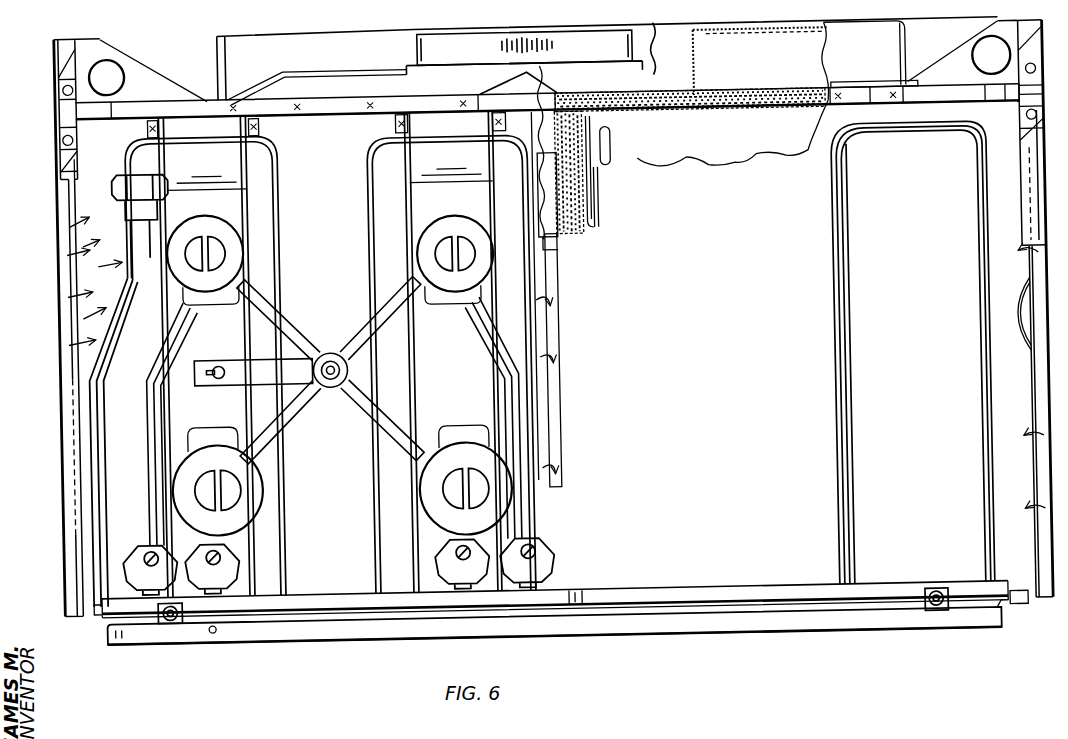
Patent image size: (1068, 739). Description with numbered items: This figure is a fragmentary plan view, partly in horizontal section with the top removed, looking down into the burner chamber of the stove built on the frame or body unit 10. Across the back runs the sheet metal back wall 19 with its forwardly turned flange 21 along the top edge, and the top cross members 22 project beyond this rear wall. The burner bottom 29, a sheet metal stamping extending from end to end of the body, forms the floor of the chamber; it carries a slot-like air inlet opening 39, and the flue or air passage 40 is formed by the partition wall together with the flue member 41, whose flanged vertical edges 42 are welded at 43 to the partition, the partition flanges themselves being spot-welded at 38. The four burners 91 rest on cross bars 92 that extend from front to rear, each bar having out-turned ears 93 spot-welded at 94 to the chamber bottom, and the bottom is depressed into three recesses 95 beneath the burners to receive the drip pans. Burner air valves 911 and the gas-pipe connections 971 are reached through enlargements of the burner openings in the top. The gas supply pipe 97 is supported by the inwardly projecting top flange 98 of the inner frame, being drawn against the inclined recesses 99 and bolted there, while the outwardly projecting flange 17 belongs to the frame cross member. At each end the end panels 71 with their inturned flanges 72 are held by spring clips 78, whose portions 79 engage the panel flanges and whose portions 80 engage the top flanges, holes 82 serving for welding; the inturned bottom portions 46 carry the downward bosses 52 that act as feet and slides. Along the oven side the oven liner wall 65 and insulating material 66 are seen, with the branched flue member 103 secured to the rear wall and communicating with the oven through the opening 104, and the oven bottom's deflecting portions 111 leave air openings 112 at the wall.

The frame or body unit 10 is at (1013, 600).
The outwardly projecting flange 17 is at (270, 633).
The sheet metal back wall 19 is at (150, 100).
The forwardly turned flange 21 is at (178, 108).
The top cross members 22 is at (67, 192).
The burner bottom 29 is at (1003, 570).
The spot welds 38 is at (557, 328).
The slot-like air inlet opening 39 is at (557, 393).
The flue or air passage 40 is at (547, 220).
The flue member 41 is at (565, 242).
The flanged vertical edges 42 is at (612, 152).
The welds 43 is at (580, 142).
The inturned bottom portions 46 is at (116, 57).
The downward bosses 52 is at (90, 88).
The oven liner wall 65 is at (583, 182).
The insulating material 66 is at (587, 162).
The end panels or end walls 71 is at (60, 338).
The inturned flanges 72 is at (67, 383).
The clips 78 is at (74, 165).
The clip portions 79 is at (67, 63).
The clip portions 80 is at (62, 123).
The holes 82 is at (63, 90).
The burners 91 is at (233, 255).
The cross bars 92 is at (420, 213).
The out-turned ears 93 is at (257, 128).
The spot welds 94 is at (263, 133).
The recesses 95 is at (397, 547).
The gas supply pipe 97 is at (97, 452).
The inwardly projecting top flange 98 is at (693, 595).
The recesses 99 is at (165, 625).
The flue member 103 is at (871, 77).
The opening 104 is at (766, 107).
The upwardly directed deflecting portions 111 is at (765, 121).
The air openings 112 is at (740, 160).
The burner air valves 911 is at (470, 565).
The connections 971 is at (163, 182).